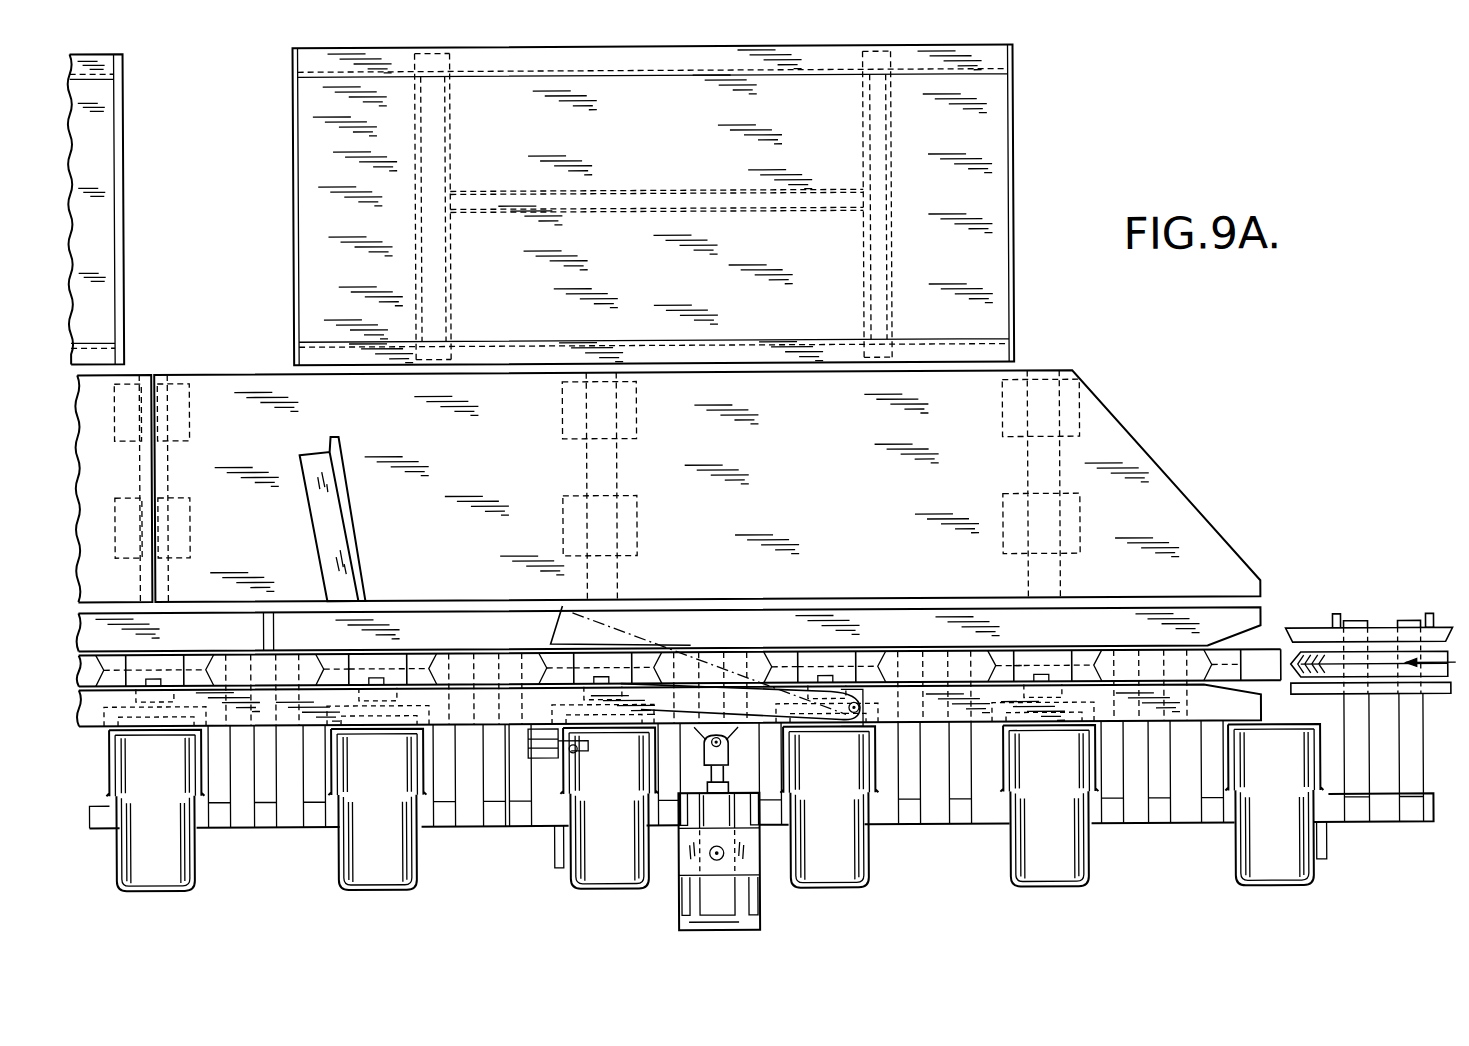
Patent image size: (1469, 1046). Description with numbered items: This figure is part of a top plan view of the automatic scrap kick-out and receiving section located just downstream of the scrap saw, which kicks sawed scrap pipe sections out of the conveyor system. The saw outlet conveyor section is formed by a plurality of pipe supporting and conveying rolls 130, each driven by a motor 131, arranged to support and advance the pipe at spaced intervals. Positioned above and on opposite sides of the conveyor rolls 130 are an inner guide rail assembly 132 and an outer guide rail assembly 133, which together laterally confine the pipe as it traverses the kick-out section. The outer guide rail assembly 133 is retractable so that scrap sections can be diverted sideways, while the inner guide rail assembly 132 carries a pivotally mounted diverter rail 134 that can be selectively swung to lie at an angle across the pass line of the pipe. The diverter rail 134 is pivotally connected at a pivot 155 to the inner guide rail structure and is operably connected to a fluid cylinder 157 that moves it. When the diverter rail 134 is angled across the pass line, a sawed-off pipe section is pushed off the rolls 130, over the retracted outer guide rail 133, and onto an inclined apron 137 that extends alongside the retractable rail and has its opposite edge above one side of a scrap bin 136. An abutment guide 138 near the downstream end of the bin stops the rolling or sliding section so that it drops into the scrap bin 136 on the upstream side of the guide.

The pipe supporting and conveying rolls 130 is at (160, 666).
The motors 131 is at (153, 878).
The inner guide rail assembly 132 is at (980, 709).
The outer guide rail assembly 133 is at (870, 628).
The diverter rail 134 is at (672, 636).
The scrap bin 136 is at (667, 144).
The inclined apron 137 is at (793, 481).
The abutment guide 138 is at (333, 515).
The pivotal connection 155 is at (852, 717).
The fluid cylinder 157 is at (713, 897).